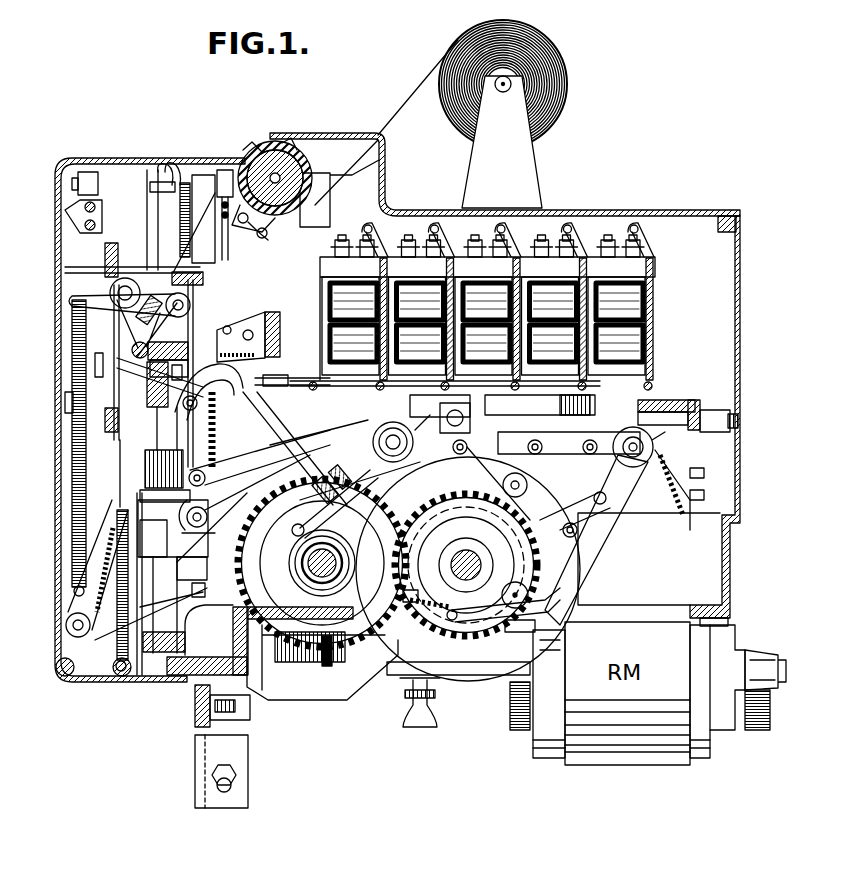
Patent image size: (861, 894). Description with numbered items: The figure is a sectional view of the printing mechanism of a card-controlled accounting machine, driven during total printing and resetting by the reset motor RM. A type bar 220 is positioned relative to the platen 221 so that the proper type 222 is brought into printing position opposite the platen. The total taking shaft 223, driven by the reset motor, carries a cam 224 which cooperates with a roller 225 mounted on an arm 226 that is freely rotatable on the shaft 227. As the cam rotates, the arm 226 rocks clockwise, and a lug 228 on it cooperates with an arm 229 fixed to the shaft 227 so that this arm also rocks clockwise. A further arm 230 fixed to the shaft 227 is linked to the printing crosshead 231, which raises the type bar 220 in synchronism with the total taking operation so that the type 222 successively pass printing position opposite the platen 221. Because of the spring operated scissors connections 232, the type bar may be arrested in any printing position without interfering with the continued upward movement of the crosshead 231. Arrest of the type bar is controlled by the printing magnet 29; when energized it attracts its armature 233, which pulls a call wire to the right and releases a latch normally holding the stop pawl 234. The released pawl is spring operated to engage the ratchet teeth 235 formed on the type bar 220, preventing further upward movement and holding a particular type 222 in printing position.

The printing magnet 29 is at (422, 297).
The type bar 220 is at (205, 178).
The platen 221 is at (290, 150).
The type 222 is at (178, 180).
The total taking shaft 223 is at (327, 572).
The cam 224 is at (308, 594).
The roller 225 is at (248, 553).
The arm 226 is at (312, 500).
The shaft 227 is at (388, 435).
The lug 228 is at (405, 597).
The arm 229 is at (400, 570).
The arm 230 is at (257, 442).
The printing crosshead 231 is at (214, 531).
The spring operated scissors connections 232 is at (95, 640).
The armature 233 is at (318, 298).
The stop pawl 234 is at (262, 372).
The ratchet teeth 235 is at (237, 398).